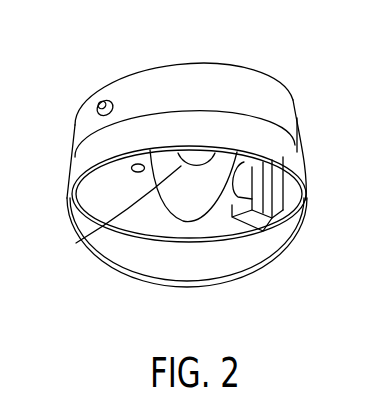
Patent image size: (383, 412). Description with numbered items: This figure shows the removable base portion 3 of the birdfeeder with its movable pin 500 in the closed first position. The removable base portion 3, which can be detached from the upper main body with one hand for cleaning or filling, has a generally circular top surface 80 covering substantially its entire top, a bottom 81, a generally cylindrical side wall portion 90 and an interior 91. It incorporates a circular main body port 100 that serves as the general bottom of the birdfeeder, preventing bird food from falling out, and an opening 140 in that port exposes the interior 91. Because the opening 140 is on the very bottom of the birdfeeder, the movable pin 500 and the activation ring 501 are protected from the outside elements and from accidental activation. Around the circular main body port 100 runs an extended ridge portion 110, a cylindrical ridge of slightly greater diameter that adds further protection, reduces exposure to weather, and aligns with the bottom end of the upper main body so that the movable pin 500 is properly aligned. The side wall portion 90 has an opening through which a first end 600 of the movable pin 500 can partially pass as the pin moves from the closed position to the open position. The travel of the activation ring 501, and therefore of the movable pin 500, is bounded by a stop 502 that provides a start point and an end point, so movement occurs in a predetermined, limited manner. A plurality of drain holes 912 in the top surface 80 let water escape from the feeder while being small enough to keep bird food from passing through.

The removable base portion 3 is at (297, 118).
The top surface 80 is at (222, 66).
The bottom 81 is at (266, 267).
The generally cylindrical side wall portion 90 is at (265, 91).
The interior 91 is at (137, 258).
The circular main body port 100 is at (175, 83).
The extended ridge portion 110 is at (75, 173).
The opening 140 is at (181, 232).
The movable pin 500 is at (75, 243).
The activation ring 501 is at (192, 203).
The stop 502 is at (263, 222).
The first end 600 is at (97, 106).
The drain holes 912 is at (139, 163).